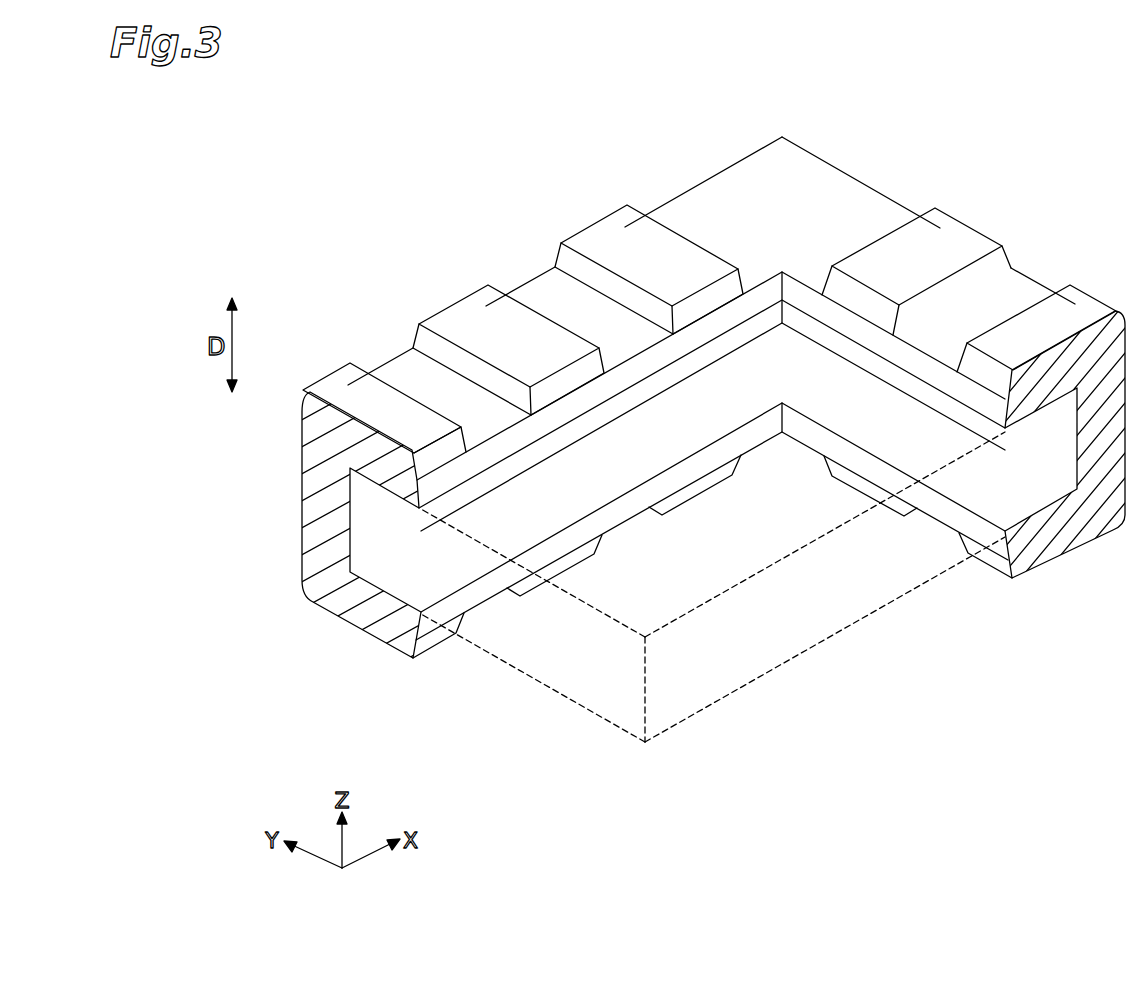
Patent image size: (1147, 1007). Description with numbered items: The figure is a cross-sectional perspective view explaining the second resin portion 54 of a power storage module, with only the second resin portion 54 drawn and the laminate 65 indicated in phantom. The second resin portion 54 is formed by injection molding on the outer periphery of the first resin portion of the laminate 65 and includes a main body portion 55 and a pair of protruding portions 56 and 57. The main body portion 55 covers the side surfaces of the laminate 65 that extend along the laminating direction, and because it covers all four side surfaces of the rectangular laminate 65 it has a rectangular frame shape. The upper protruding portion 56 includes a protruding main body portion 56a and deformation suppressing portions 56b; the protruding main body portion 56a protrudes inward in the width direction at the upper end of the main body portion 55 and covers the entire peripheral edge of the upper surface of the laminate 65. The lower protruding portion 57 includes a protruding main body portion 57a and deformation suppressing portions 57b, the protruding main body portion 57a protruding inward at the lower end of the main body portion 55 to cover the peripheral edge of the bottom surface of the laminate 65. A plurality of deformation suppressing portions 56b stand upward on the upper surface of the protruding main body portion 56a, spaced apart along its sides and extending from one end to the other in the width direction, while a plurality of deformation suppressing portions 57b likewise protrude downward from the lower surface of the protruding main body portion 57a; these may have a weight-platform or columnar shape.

The second resin portion 54 is at (1030, 145).
The main body portion 55 is at (320, 497).
The protruding portion 56 is at (420, 382).
The protruding main body portion 56a is at (541, 292).
The deformation suppressing portion 56b is at (608, 242).
The protruding portion 57 is at (338, 640).
The protruding main body portion 57a is at (485, 592).
The deformation suppressing portion 57b is at (540, 578).
The laminate 65 is at (810, 627).